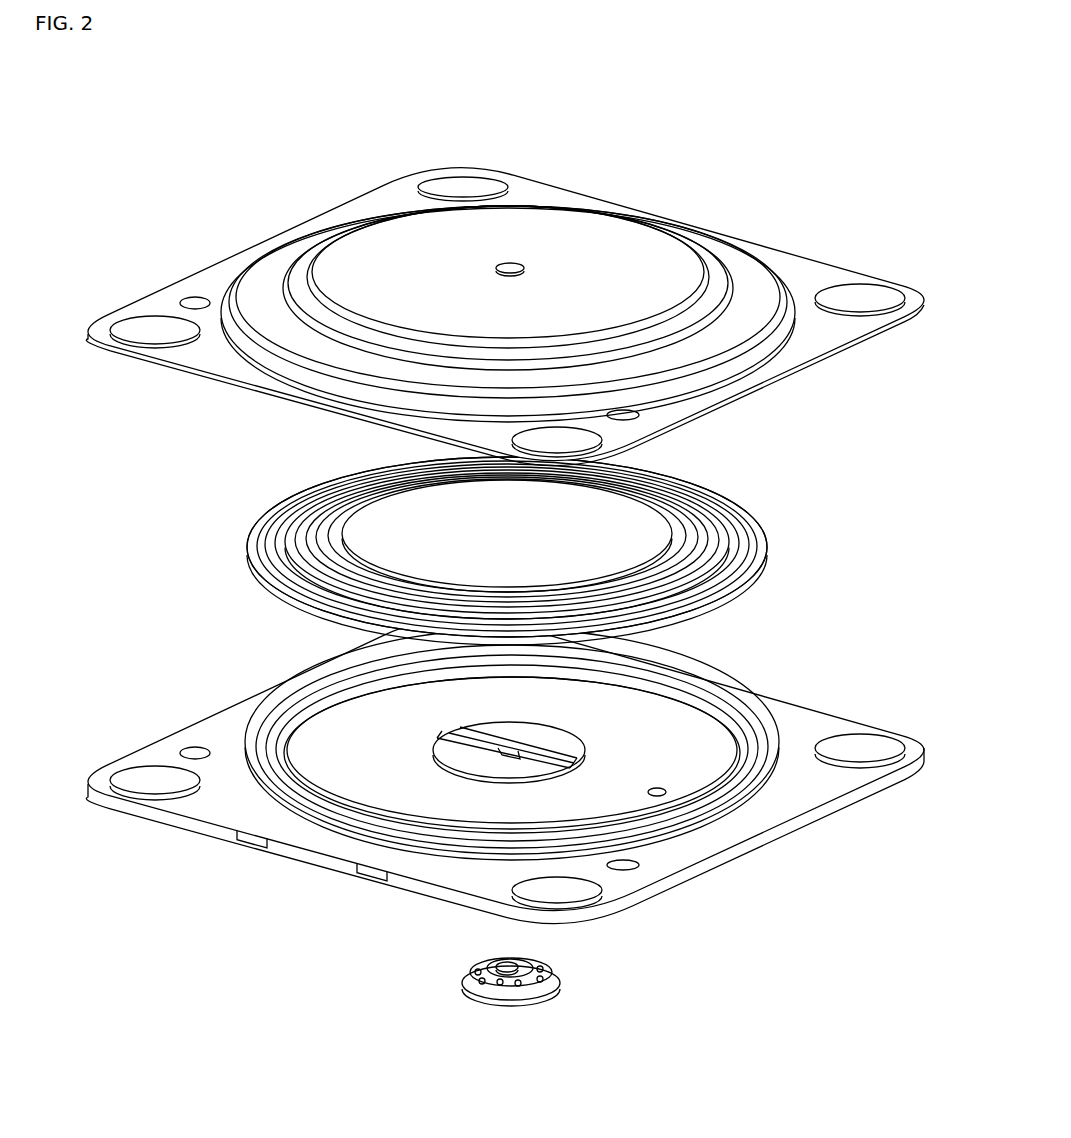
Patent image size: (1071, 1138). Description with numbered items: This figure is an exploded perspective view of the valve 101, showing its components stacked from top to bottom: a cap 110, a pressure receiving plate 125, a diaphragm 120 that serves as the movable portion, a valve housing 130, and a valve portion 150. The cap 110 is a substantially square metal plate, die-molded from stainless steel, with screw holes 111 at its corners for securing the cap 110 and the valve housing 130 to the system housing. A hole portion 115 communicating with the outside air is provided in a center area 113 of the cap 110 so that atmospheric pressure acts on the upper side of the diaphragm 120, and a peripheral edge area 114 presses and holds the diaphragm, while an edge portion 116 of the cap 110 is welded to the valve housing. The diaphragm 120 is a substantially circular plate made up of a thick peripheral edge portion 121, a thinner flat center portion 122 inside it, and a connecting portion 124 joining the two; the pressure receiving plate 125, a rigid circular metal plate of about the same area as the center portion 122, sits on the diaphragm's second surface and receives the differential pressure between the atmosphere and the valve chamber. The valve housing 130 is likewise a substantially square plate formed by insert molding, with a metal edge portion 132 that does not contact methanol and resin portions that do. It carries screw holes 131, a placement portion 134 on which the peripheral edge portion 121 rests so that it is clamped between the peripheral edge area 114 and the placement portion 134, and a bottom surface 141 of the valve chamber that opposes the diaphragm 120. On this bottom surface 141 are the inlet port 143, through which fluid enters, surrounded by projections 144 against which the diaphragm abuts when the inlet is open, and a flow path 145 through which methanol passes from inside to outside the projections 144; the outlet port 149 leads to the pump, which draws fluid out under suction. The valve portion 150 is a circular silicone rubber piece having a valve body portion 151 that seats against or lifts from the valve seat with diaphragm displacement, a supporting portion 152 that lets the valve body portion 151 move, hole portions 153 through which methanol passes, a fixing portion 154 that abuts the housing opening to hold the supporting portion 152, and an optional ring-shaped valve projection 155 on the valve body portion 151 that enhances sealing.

The valve 101 is at (766, 103).
The cap 110 is at (512, 264).
The screw holes 111 is at (462, 192).
The center area 113 is at (627, 240).
The peripheral edge area 114 is at (740, 257).
The hole portion 115 is at (512, 265).
The edge portion 116 is at (835, 332).
The diaphragm 120 is at (556, 541).
The peripheral edge portion 121 is at (767, 557).
The center portion 122 is at (663, 553).
The connecting portion 124 is at (720, 533).
The pressure receiving plate 125 is at (627, 527).
The valve housing 130 is at (511, 784).
The screw holes 131 is at (157, 783).
The edge portion 132 is at (727, 833).
The placement portion 134 is at (763, 747).
The bottom surface 141 is at (653, 725).
The inlet port 143 is at (510, 750).
The projections 144 is at (547, 737).
The flow path 145 is at (467, 738).
The outlet port 149 is at (660, 787).
The valve portion 150 is at (530, 987).
The valve body portion 151 is at (543, 958).
The supporting portion 152 is at (472, 988).
The hole portions 153 is at (475, 968).
The fixing portion 154 is at (513, 998).
The valve projection 155 is at (500, 962).